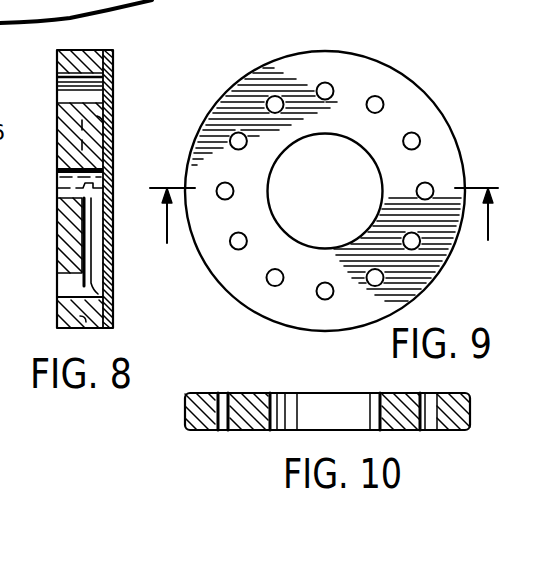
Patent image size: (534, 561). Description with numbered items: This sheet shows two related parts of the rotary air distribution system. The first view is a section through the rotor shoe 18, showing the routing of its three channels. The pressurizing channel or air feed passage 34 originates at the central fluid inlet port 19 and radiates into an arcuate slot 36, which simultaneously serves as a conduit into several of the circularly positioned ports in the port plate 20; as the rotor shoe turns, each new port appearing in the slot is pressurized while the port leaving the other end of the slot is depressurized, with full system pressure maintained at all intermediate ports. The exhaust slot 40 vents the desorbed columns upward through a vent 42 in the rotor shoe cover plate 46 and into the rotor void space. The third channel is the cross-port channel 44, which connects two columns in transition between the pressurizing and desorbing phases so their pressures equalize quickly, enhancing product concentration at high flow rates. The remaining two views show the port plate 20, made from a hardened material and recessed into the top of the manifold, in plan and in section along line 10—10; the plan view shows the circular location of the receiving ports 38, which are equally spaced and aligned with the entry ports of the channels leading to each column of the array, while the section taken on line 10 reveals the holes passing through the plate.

In FIG. 9, the section line 10— 10 is at (329, 229).
In FIG. 8, the rotor shoe 18 is at (63, 313).
In FIG. 8, the central fluid inlet port 19 is at (60, 175).
In FIG. 9, the port plate 20 is at (367, 71).
In FIG. 10, the port plate 20 is at (258, 403).
In FIG. 8, the air feed passage 34 is at (95, 252).
In FIG. 8, the arcuate slot 36 is at (63, 292).
In FIG. 9, the receiving ports 38 is at (416, 131).
In FIG. 10, the receiving ports 38 is at (223, 396).
In FIG. 8, the exhaust slot 40 is at (63, 92).
In FIG. 8, the vent 42 is at (110, 94).
In FIG. 8, the cross-port channel 44 is at (100, 122).
In FIG. 8, the rotor shoe cover plate 46 is at (110, 161).